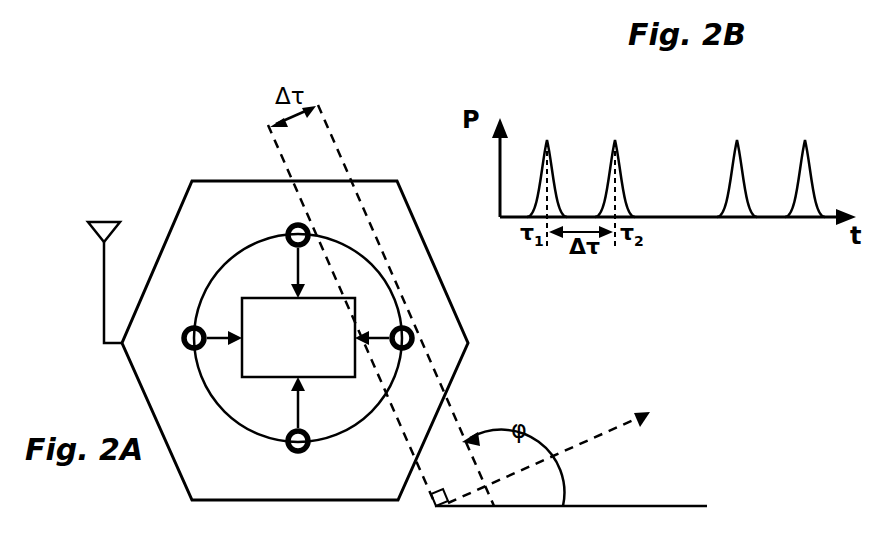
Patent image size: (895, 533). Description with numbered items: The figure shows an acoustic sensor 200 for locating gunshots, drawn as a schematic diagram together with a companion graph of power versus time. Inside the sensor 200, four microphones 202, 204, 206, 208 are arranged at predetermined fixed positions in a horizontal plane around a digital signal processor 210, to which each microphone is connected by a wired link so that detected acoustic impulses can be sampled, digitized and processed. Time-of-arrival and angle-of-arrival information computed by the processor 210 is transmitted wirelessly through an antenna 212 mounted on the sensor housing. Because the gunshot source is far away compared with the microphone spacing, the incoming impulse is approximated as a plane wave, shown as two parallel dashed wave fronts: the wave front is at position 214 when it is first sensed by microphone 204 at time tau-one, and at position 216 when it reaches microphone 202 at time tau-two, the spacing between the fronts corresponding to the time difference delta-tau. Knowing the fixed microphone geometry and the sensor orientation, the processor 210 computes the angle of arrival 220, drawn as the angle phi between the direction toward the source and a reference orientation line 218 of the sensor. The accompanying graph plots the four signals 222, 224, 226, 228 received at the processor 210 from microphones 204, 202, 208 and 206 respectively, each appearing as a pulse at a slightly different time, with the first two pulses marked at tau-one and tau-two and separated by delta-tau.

In FIG. 2A, the sensor 200 is at (298, 364).
In FIG. 2A, the microphone 202 is at (288, 228).
In FIG. 2A, the microphone 204 is at (406, 326).
In FIG. 2A, the microphone 206 is at (192, 352).
In FIG. 2A, the microphone 208 is at (284, 445).
In FIG. 2A, the digital signal processor 210 is at (298, 337).
In FIG. 2A, the antenna 212 is at (88, 226).
In FIG. 2A, the impulse wave front position 214 is at (342, 158).
In FIG. 2A, the impulse wave front position 216 is at (282, 160).
In FIG. 2A, the reference orientation line 218 is at (668, 504).
In FIG. 2A, the angle of arrival 220 is at (592, 436).
In FIG. 2B, the signal 222 is at (546, 140).
In FIG. 2B, the signal 224 is at (614, 140).
In FIG. 2B, the signal 226 is at (736, 140).
In FIG. 2B, the signal 228 is at (804, 140).